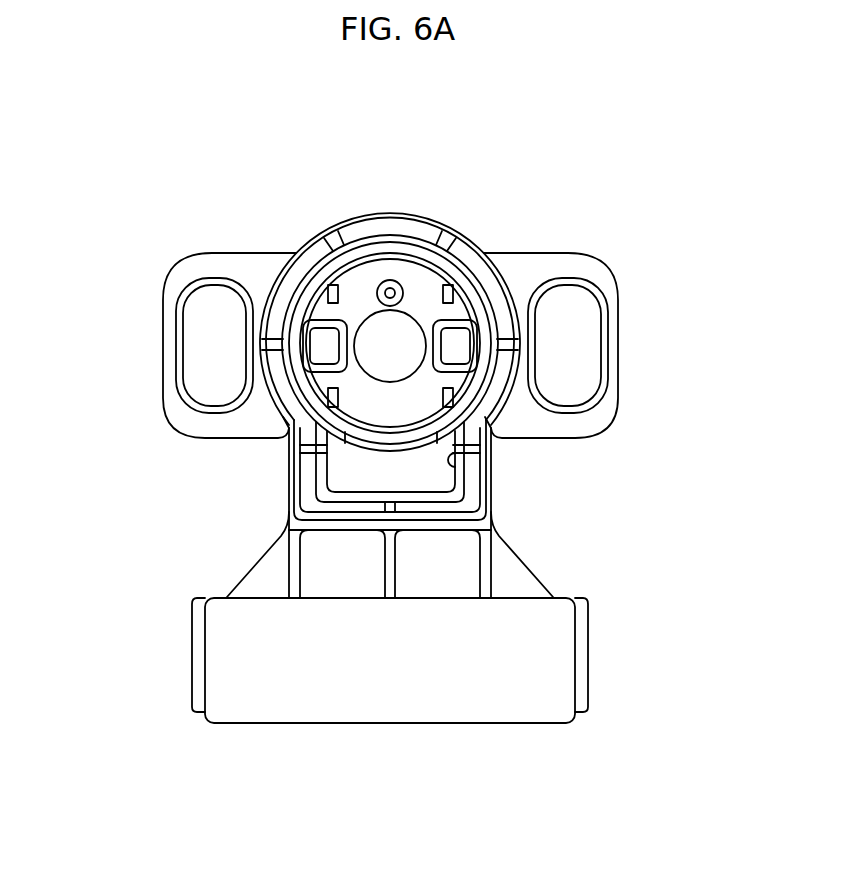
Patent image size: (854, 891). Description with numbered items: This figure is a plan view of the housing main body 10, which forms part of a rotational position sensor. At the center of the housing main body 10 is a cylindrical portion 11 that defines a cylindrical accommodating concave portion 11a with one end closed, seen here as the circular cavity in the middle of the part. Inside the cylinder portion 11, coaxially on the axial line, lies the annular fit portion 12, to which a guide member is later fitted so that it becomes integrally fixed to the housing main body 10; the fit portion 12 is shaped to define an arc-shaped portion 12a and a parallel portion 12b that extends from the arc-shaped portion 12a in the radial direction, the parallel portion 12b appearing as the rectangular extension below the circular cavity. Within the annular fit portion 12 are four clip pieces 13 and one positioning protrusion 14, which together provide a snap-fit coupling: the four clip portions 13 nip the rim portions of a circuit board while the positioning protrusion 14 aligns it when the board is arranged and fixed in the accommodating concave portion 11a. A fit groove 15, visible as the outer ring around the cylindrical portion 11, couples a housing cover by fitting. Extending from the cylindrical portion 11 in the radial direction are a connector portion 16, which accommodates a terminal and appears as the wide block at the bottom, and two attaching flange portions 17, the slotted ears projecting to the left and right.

The housing main body 10 is at (648, 258).
The cylindrical portion 11 is at (443, 223).
The accommodating concave portion 11a is at (407, 415).
The fit portion 12 is at (481, 306).
The arc-shaped portion 12a is at (358, 238).
The parallel portion 12b is at (446, 463).
The clip pieces 13 is at (330, 287).
The positioning protrusion 14 is at (392, 280).
The fit groove 15 is at (288, 285).
The connector portion 16 is at (521, 705).
The attaching flange portions 17 is at (176, 416).